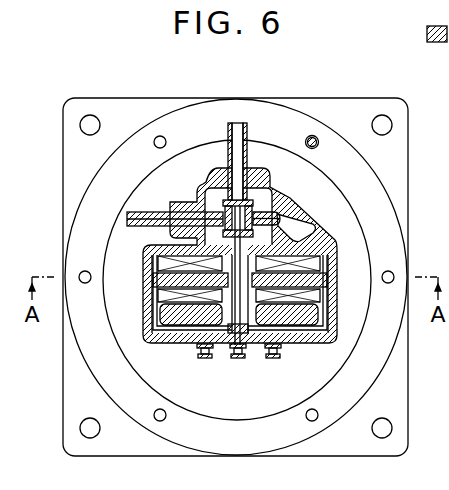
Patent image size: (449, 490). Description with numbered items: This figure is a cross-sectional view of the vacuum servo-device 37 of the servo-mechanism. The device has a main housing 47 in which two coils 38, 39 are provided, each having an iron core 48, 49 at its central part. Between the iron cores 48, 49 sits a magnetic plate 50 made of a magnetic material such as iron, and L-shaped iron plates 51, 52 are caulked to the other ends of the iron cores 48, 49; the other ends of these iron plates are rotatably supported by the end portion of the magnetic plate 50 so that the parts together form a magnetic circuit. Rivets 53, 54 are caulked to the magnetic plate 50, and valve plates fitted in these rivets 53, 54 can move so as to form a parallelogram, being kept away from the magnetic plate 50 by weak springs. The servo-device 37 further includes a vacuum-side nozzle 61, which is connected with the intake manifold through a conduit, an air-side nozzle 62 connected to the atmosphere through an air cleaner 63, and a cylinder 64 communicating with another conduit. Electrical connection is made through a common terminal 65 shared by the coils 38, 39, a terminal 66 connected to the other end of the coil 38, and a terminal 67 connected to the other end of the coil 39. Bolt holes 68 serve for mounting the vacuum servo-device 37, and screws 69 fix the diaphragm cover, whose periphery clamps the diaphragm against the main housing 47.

The vacuum servo-device 37 is at (162, 98).
The coil 38 is at (207, 286).
The coil 39 is at (302, 296).
The main housing 47 is at (330, 245).
The iron core 48 is at (175, 288).
The iron core 49 is at (322, 280).
The magnetic plate 50 is at (220, 350).
The L-shaped iron plate 51 is at (175, 344).
The L-shaped iron plate 52 is at (318, 318).
The rivet 53 is at (258, 198).
The rivet 54 is at (187, 238).
The vacuum-side nozzle 61 is at (202, 196).
The air-side nozzle 62 is at (257, 202).
The air cleaner 63 is at (303, 227).
The cylinder 64 is at (250, 138).
The common terminal 65 is at (250, 358).
The terminal 66 is at (215, 358).
The terminal 67 is at (278, 356).
The bolt holes 68 is at (90, 126).
The screws 69 is at (314, 136).